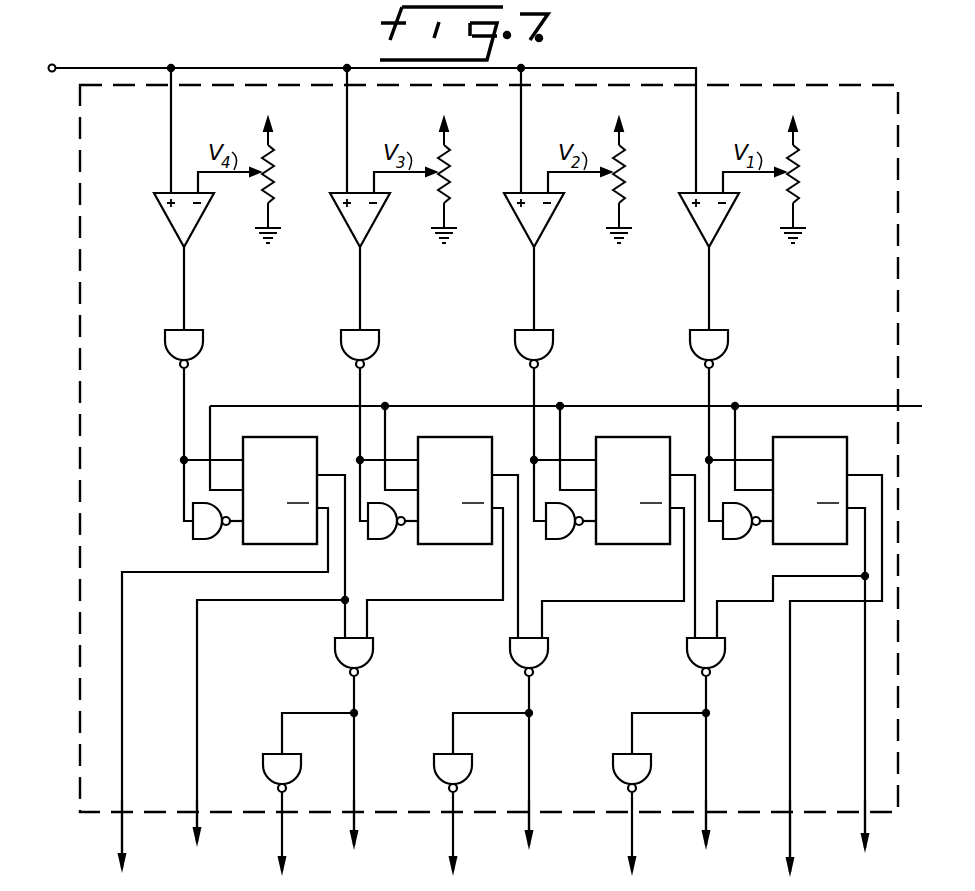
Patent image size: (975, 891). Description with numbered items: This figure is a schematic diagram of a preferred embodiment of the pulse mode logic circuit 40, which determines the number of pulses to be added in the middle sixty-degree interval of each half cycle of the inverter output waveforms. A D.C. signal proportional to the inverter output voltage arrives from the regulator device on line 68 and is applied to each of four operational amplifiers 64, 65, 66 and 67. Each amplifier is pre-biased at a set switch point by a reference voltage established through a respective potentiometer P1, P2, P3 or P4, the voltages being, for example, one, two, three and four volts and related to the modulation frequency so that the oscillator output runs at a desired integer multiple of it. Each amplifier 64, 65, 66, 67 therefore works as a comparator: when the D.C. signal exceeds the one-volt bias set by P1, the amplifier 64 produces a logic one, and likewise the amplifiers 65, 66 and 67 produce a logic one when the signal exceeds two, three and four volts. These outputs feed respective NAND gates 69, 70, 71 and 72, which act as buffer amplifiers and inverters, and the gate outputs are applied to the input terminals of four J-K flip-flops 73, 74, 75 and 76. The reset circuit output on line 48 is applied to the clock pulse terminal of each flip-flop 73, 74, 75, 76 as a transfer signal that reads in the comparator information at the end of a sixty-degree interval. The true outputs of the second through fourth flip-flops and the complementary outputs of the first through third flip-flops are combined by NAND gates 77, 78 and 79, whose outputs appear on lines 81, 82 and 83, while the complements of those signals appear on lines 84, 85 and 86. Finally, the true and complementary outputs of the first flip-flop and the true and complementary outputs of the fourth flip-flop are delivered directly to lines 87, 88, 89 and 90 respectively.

The pulse mode logic circuit 40 is at (80, 517).
The line 48 is at (900, 406).
The operational amplifier 64 is at (700, 240).
The operational amplifier 65 is at (524, 240).
The operational amplifier 66 is at (350, 240).
The operational amplifier 67 is at (172, 240).
The line 68 is at (104, 68).
The NAND gate 69 is at (728, 347).
The NAND gate 70 is at (553, 347).
The NAND gate 71 is at (379, 347).
The NAND gate 72 is at (203, 347).
The J-K flip-flop 73 is at (858, 430).
The J-K flip-flop 74 is at (681, 430).
The J-K flip-flop 75 is at (503, 430).
The J-K flip-flop 76 is at (328, 430).
The NAND gate 77 is at (725, 655).
The NAND gate 78 is at (548, 655).
The NAND gate 79 is at (373, 655).
The line 81 is at (704, 830).
The line 82 is at (527, 830).
The line 83 is at (352, 830).
The line 84 is at (631, 836).
The line 85 is at (452, 836).
The line 86 is at (280, 834).
The line 87 is at (788, 836).
The line 88 is at (863, 828).
The line 89 is at (195, 826).
The line 90 is at (121, 838).
The potentiometer P1 is at (799, 186).
The potentiometer P2 is at (625, 186).
The potentiometer P3 is at (450, 186).
The potentiometer P4 is at (274, 186).